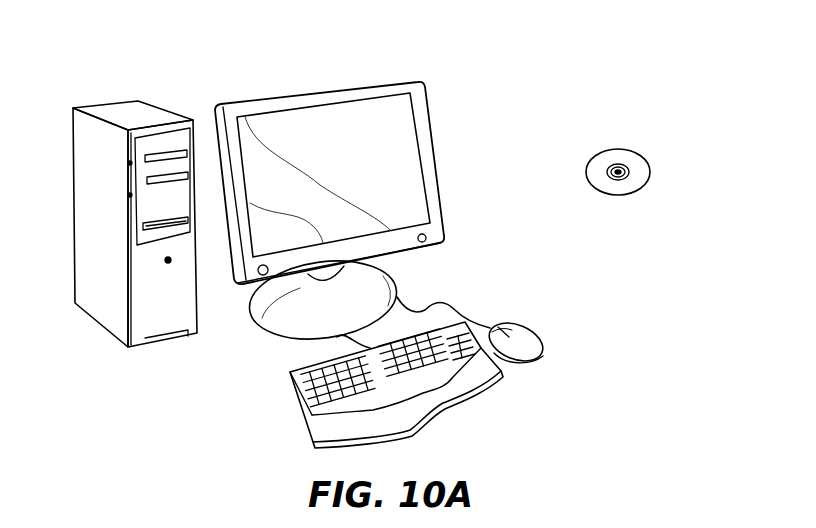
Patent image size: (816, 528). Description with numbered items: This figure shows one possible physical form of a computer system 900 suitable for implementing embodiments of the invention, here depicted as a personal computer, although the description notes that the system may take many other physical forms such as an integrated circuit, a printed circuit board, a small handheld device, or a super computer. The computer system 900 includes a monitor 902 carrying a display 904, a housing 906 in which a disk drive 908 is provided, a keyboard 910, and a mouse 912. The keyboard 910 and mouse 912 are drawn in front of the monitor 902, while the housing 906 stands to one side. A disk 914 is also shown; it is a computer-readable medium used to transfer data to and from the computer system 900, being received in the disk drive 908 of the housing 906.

The computer system 900 is at (549, 63).
The monitor 902 is at (374, 215).
The display 904 is at (395, 120).
The housing 906 is at (160, 196).
The disk drive 908 is at (177, 222).
The keyboard 910 is at (303, 412).
The mouse 912 is at (537, 332).
The disk 914 is at (637, 150).